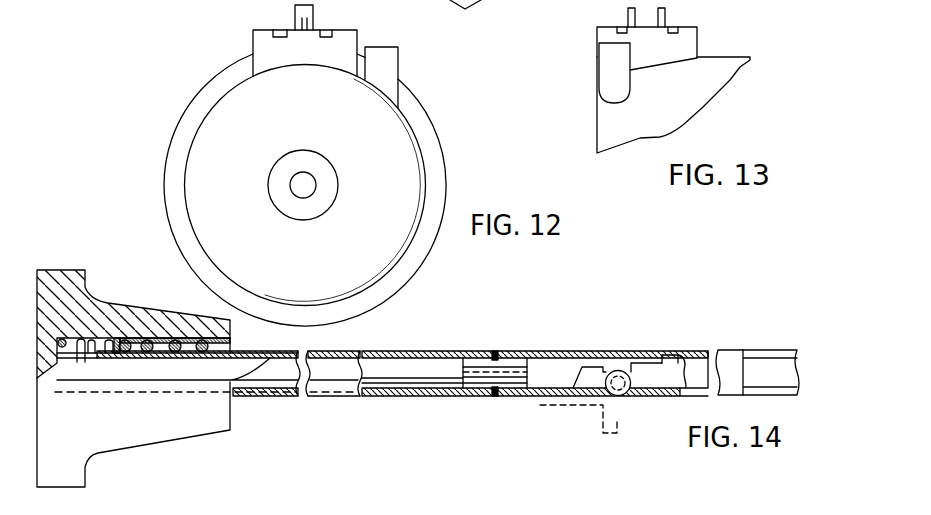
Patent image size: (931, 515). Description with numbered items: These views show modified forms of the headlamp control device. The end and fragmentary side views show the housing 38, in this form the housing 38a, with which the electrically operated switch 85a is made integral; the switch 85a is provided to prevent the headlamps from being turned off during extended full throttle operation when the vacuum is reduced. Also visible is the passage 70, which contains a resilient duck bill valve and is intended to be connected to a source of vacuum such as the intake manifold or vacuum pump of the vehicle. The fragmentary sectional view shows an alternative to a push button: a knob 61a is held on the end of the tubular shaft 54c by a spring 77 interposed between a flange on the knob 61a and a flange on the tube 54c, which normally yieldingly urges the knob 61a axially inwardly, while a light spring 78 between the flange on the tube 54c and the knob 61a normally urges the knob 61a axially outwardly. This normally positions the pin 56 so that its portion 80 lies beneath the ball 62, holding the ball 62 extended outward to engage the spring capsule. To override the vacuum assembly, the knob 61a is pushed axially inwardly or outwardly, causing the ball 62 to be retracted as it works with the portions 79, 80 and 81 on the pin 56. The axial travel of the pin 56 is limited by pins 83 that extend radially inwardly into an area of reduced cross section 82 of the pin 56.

In FIG. 12, the housing 38 is at (408, 120).
In FIG. 13, the housing 38a is at (722, 63).
In FIG. 12, the passage 70 is at (400, 63).
In FIG. 12, the switch 85a is at (257, 38).
In FIG. 13, the switch 85a is at (597, 33).
In FIG. 14, the knob 61a is at (65, 275).
In FIG. 14, the light spring 78 is at (92, 350).
In FIG. 14, the spring 77 is at (148, 352).
In FIG. 14, the pin 56 is at (545, 360).
In FIG. 14, the tubular shaft 54c is at (343, 395).
In FIG. 14, the area of reduced cross section 82 is at (477, 397).
In FIG. 14, the pins 83 is at (495, 351).
In FIG. 14, the portion 79 is at (592, 367).
In FIG. 14, the portion 80 is at (620, 371).
In FIG. 14, the portion 81 is at (664, 358).
In FIG. 14, the ball 62 is at (627, 395).